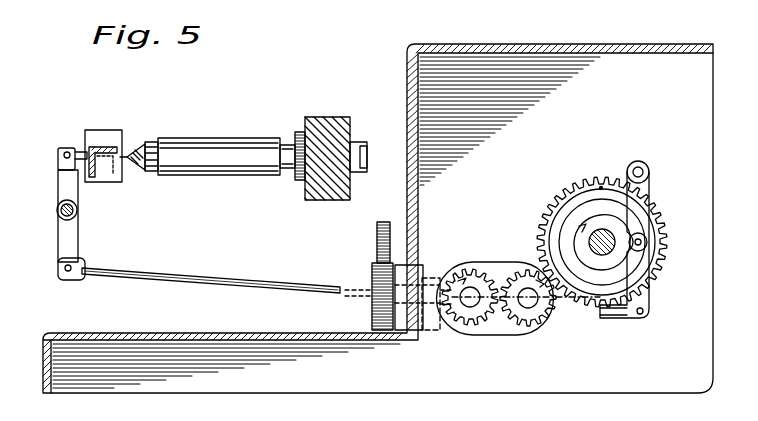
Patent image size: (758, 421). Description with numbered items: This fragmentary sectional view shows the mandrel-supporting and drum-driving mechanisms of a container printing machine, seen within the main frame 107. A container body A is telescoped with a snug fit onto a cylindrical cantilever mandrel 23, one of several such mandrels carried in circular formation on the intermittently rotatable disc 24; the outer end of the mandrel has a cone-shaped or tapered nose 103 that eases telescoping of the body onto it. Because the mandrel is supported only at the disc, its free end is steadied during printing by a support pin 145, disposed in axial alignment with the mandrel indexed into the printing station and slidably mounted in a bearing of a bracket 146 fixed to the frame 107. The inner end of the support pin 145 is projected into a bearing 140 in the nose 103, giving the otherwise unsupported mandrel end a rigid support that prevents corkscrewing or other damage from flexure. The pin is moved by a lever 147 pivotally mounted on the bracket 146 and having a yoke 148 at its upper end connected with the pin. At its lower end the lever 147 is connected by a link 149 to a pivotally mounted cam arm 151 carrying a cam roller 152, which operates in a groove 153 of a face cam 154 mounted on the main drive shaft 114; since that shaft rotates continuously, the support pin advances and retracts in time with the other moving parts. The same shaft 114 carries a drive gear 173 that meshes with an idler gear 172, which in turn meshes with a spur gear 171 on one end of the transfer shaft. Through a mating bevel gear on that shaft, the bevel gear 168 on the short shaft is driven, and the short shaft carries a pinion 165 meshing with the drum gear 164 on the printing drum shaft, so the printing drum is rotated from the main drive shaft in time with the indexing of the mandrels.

The container body A is at (210, 137).
The cantilever mandrel 23 is at (150, 138).
The rotatable disc 24 is at (320, 128).
The tapered nose 103 is at (138, 142).
The frame 107 is at (417, 180).
The main drive shaft 114 is at (588, 239).
The bearing 140 is at (143, 174).
The support pin 145 is at (80, 130).
The bracket 146 is at (105, 173).
The lever 147 is at (70, 236).
The yoke 148 is at (63, 160).
The link 149 is at (224, 277).
The cam arm 151 is at (642, 190).
The cam roller 152 is at (641, 262).
The groove 153 is at (601, 188).
The face cam 154 is at (580, 200).
The drum gear 164 is at (377, 229).
The pinion 165 is at (372, 321).
The bevel gear 168 is at (431, 333).
The spur gear 171 is at (474, 312).
The idler gear 172 is at (538, 315).
The drive gear 173 is at (553, 203).